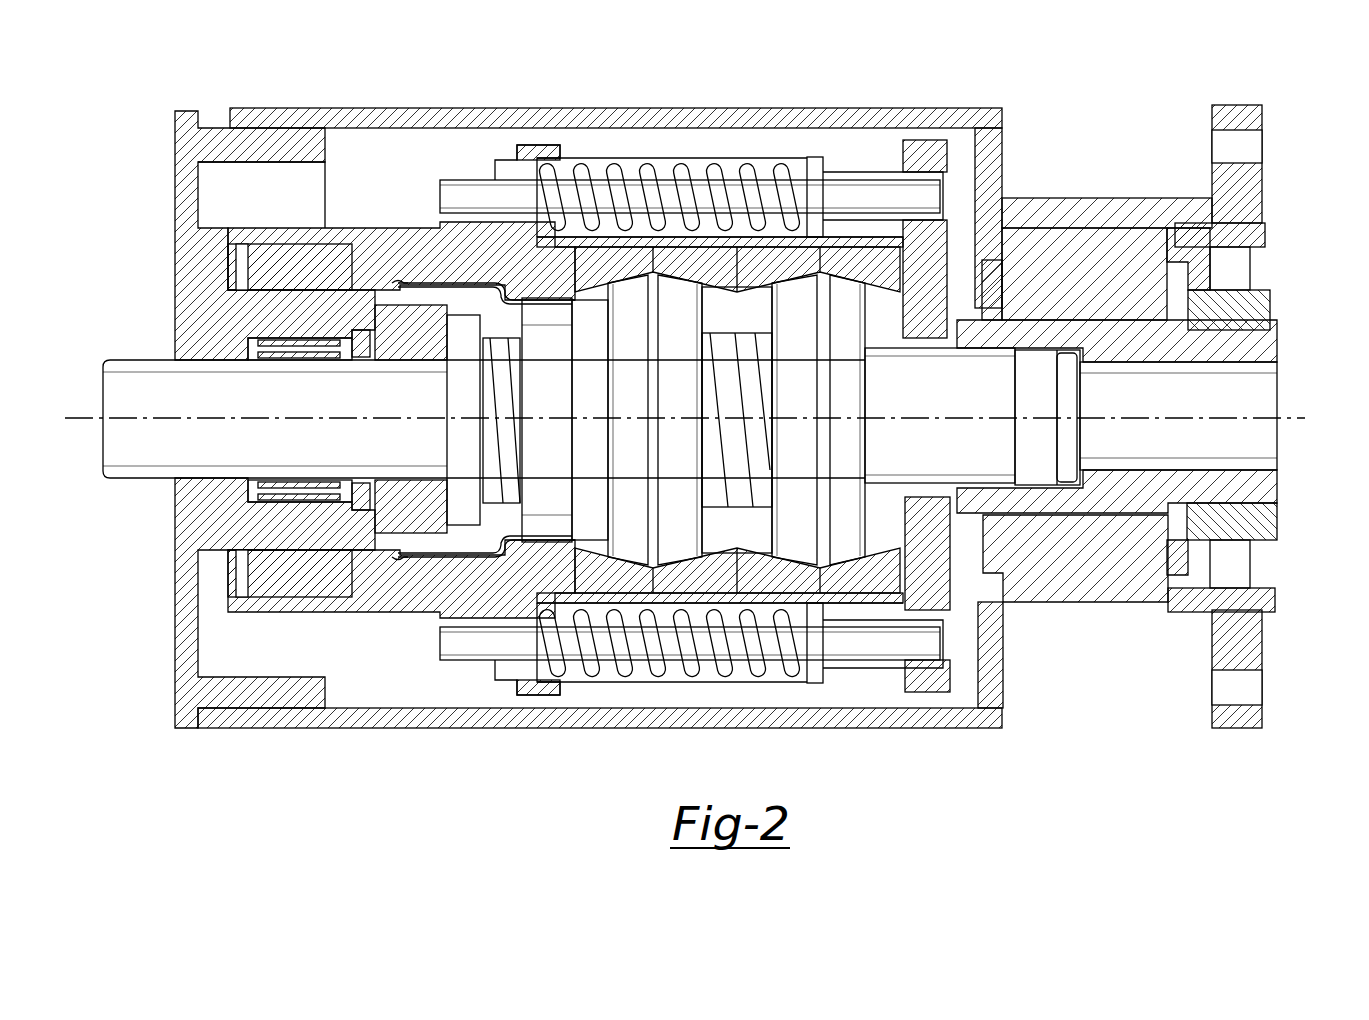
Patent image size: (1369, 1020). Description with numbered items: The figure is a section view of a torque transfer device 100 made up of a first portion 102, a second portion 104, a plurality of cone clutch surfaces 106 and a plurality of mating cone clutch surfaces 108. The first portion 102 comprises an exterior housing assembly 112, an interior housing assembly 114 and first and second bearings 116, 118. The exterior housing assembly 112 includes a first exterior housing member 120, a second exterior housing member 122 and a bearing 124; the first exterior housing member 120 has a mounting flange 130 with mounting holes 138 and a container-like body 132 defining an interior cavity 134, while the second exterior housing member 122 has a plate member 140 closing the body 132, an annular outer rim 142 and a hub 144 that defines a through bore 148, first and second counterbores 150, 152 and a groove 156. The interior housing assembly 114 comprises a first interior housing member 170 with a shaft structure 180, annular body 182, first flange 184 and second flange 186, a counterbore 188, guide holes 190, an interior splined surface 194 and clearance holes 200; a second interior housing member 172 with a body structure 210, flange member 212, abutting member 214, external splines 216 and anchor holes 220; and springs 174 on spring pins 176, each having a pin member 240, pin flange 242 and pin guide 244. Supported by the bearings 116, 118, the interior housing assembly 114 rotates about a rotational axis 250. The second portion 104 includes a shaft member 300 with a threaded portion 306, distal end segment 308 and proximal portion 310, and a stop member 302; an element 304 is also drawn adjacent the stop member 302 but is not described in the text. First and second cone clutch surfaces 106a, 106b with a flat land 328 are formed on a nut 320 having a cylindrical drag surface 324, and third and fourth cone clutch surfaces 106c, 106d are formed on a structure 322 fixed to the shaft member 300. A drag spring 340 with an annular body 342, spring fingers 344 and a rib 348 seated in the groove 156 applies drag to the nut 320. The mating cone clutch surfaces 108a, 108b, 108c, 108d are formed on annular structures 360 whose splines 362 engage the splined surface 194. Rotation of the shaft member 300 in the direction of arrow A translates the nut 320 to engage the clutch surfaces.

The torque transfer device 100 is at (334, 776).
The first portion 102 is at (1020, 76).
The second portion 104 is at (100, 480).
The cone clutch surfaces 106 is at (832, 447).
The first cone clutch surface 106a is at (632, 562).
The second cone clutch surface 106b is at (690, 558).
The third cone clutch surface 106c is at (795, 562).
The fourth cone clutch surface 106d is at (850, 554).
The mating cone clutch surfaces 108 is at (835, 258).
The first mating cone clutch surface 108a is at (635, 277).
The second mating cone clutch surface 108b is at (672, 280).
The third mating cone clutch surface 108c is at (760, 247).
The fourth mating cone clutch surface 108d is at (860, 250).
The exterior housing assembly 112 is at (345, 108).
The interior housing assembly 114 is at (302, 238).
The first bearing 116 is at (1130, 245).
The second bearing 118 is at (265, 257).
The first exterior housing member 120 is at (880, 126).
The second exterior housing member 122 is at (178, 182).
The bearing 124 is at (275, 480).
The mounting flange 130 is at (1240, 190).
The body 132 is at (550, 118).
The interior cavity 134 is at (395, 138).
The mounting holes 138 is at (1250, 145).
The plate member 140 is at (185, 605).
The annular outer rim 142 is at (222, 130).
The hub 144 is at (290, 520).
The through bore 148 is at (185, 362).
The first counterbore 150 is at (410, 345).
The second counterbore 152 is at (255, 365).
The groove 156 is at (400, 300).
The first interior housing member 170 is at (1275, 340).
The second interior housing member 172 is at (350, 600).
The springs 174 is at (608, 655).
The spring pins 176 is at (832, 665).
The shaft structure 180 is at (1130, 505).
The annular body 182 is at (900, 604).
The first flange 184 is at (927, 240).
The second flange 186 is at (560, 158).
The counterbore 188 is at (1035, 394).
The guide holes 190 is at (930, 660).
The interior splined surface 194 is at (700, 228).
The clearance holes 200 is at (520, 185).
The body structure 210 is at (402, 640).
The flange member 212 is at (515, 683).
The abutting member 214 is at (497, 180).
The external splines 216 is at (535, 540).
The anchor holes 220 is at (482, 190).
The pin member 240 is at (680, 640).
The pin flange 242 is at (830, 688).
The pin guide 244 is at (930, 640).
The rotational axis 250 is at (1295, 420).
The shaft member 300 is at (95, 470).
The stop member 302 is at (447, 442).
The roller bearing 304 is at (501, 420).
The threaded portion 306 is at (728, 490).
The distal end segment 308 is at (998, 457).
The proximal portion 310 is at (312, 410).
The nut 320 is at (590, 370).
The structure 322 is at (868, 382).
The cylindrical drag surface 324 is at (570, 459).
The flat land 328 is at (820, 312).
The drag spring 340 is at (430, 283).
The annular body 342 is at (465, 555).
The spring fingers 344 is at (455, 270).
The rib 348 is at (410, 290).
The annular structure 360 is at (870, 250).
The splines 362 is at (727, 145).
The arrow A is at (78, 470).